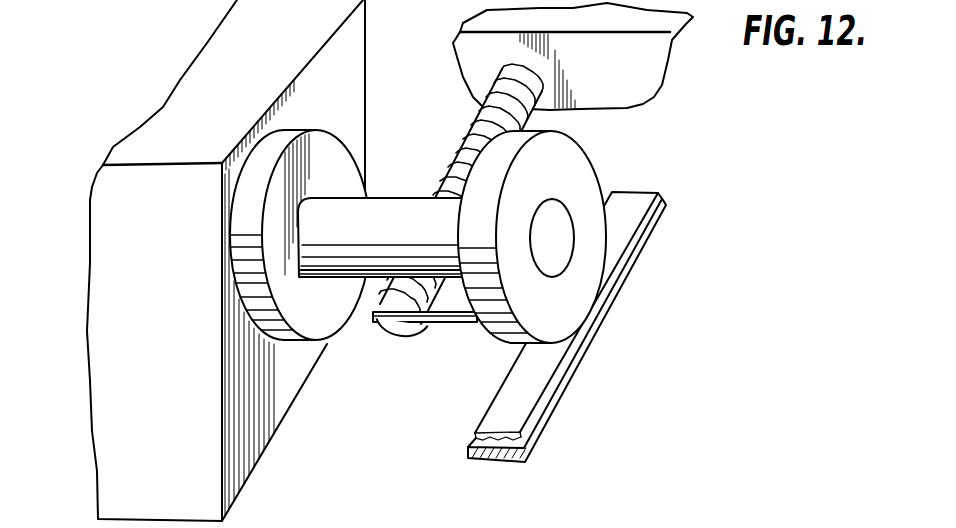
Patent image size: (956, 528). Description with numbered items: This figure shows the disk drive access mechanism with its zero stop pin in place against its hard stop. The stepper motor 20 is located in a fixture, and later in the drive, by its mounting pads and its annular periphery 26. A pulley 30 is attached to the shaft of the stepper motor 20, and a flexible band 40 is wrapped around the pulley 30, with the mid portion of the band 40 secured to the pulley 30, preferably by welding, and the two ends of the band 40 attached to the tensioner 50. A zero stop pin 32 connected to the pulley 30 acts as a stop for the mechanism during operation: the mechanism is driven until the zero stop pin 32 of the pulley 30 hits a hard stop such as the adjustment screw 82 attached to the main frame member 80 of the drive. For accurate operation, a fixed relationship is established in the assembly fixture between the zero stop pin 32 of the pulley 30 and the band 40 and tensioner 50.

The stepper motor 20 is at (218, 48).
The annular periphery 26 is at (263, 143).
The pulley 30 is at (578, 282).
The zero stop pin 32 is at (453, 320).
The flexible band 40 is at (557, 370).
The tensioner 50 is at (530, 450).
The main frame member 80 is at (490, 25).
The adjustment screw 82 is at (550, 115).